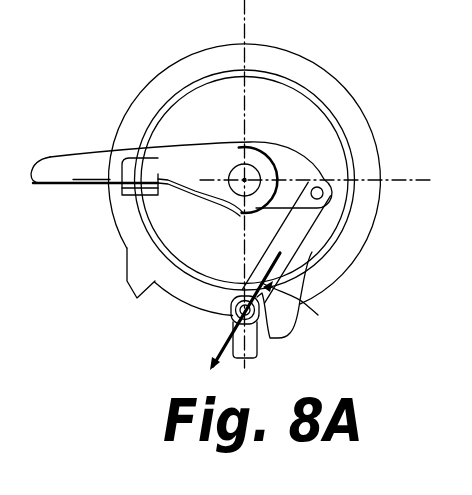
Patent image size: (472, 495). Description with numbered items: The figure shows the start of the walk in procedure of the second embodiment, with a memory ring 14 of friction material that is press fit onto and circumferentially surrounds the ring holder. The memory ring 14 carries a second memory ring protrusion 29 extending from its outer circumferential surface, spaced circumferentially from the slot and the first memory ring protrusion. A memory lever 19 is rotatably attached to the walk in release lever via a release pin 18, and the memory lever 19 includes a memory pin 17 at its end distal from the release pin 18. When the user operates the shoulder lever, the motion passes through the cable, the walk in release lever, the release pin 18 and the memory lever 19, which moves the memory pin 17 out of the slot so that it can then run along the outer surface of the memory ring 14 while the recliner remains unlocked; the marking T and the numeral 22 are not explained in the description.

The memory ring 14 is at (318, 78).
The hub 22 is at (248, 176).
The second memory ring protrusion 29 is at (127, 281).
The release pin 18 is at (323, 197).
The memory lever 19 is at (290, 243).
The memory pin 17 is at (232, 313).
The tangential force direction T is at (271, 311).